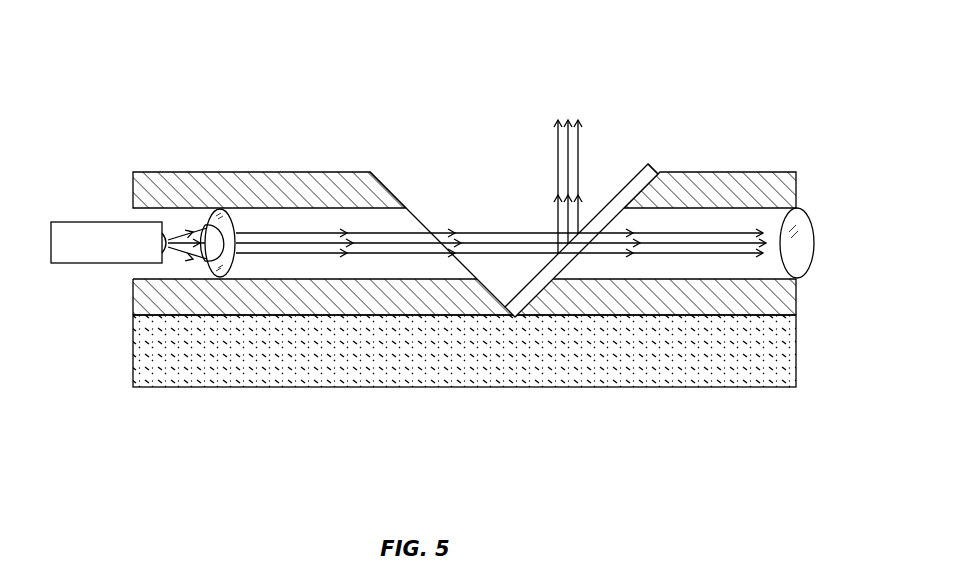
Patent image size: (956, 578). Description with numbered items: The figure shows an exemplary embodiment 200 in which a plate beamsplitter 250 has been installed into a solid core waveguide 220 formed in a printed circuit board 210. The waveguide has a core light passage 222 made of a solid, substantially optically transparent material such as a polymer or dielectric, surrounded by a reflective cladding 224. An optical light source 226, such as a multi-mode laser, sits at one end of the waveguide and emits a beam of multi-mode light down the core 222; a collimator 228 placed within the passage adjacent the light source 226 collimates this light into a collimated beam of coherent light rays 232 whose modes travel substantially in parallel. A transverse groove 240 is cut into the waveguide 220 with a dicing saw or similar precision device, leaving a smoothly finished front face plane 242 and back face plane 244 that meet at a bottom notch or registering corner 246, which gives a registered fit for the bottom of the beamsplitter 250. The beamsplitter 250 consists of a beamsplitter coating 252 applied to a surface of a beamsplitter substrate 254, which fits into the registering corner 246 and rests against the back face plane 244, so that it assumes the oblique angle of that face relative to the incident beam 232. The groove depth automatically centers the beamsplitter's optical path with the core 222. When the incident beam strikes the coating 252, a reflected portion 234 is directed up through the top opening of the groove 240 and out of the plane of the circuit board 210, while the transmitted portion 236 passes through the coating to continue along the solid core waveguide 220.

The exemplary embodiment 200 is at (80, 92).
The printed circuit board 210 is at (200, 387).
The solid core waveguide 220 is at (283, 172).
The core light passage 222 is at (803, 229).
The reflective cladding 224 is at (797, 302).
The optical light source 226 is at (90, 263).
The collimator 228 is at (205, 262).
The collimated beam of coherent light rays 232 is at (313, 256).
The reflected portion 234 is at (555, 140).
The transmitted portion 236 is at (706, 253).
The transverse groove 240 is at (482, 198).
The front face plane 242 is at (390, 183).
The back face plane 244 is at (556, 298).
The registering corner 246 is at (512, 313).
The plate beamsplitter 250 is at (706, 122).
The beamsplitter coating 252 is at (607, 192).
The beamsplitter substrate 254 is at (658, 170).